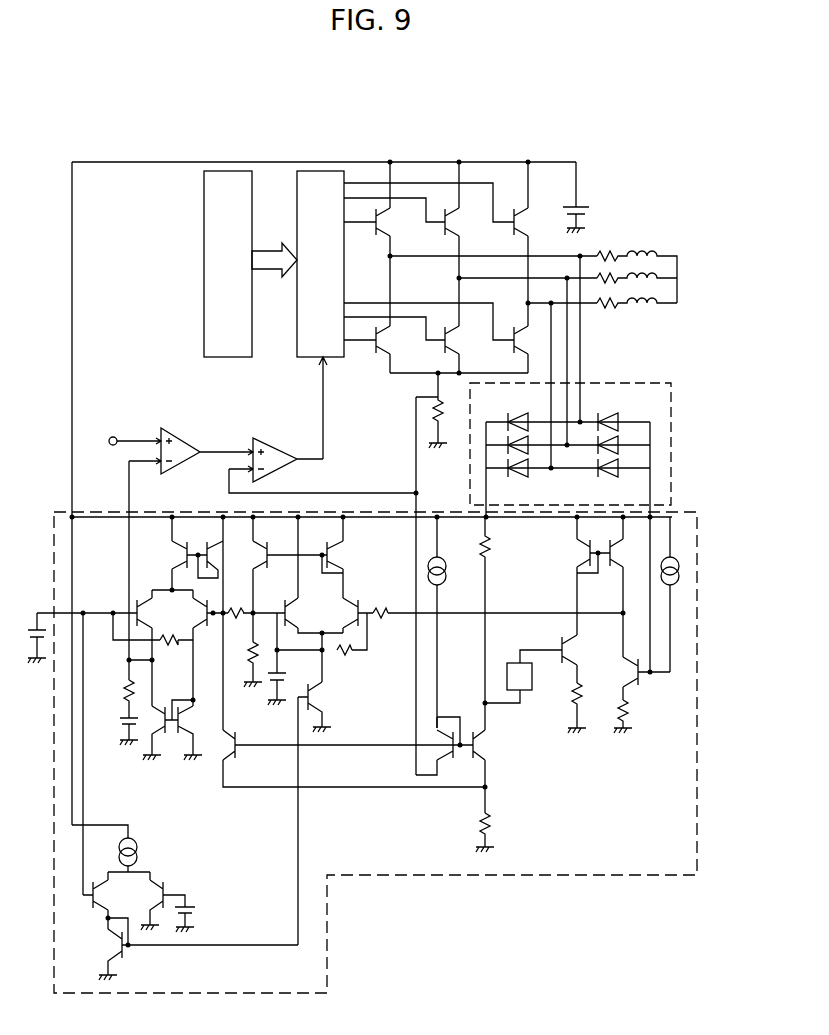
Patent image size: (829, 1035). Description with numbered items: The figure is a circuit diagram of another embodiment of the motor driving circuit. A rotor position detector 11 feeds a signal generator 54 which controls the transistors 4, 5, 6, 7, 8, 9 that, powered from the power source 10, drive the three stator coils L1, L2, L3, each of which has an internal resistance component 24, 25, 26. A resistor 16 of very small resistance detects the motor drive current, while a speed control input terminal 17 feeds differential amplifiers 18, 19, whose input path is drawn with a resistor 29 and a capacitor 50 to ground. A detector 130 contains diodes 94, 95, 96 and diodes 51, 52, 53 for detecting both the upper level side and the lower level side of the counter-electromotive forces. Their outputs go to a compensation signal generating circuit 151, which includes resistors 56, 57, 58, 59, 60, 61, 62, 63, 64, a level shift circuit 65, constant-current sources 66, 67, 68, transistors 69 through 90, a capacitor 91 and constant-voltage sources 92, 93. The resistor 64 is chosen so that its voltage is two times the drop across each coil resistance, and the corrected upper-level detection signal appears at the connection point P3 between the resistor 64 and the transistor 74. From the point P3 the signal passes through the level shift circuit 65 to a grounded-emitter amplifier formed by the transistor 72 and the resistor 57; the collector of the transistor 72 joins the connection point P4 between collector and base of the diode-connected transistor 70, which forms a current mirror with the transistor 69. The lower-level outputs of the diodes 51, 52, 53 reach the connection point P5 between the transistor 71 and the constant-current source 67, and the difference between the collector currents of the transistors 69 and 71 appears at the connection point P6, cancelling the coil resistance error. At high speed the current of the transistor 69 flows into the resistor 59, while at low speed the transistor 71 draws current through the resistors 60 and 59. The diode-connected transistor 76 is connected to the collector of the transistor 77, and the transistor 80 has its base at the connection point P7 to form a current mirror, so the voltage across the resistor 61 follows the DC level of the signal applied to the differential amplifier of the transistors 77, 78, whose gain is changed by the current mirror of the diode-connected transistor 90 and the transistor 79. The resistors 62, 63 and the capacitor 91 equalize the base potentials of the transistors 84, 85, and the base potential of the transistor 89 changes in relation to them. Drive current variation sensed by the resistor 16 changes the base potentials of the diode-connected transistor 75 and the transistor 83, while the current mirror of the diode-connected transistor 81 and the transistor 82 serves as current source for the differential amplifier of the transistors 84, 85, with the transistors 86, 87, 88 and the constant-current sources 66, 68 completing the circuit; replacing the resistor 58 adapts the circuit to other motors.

The transistor 4 is at (390, 230).
The transistor 5 is at (459, 230).
The transistor 6 is at (528, 215).
The transistor 7 is at (390, 346).
The transistor 8 is at (459, 348).
The transistor 9 is at (528, 348).
The power source 10 is at (580, 200).
The position detector 11 is at (232, 171).
The resistor 16 is at (445, 420).
The speed control input terminal 17 is at (112, 437).
The differential amplifier 18 is at (190, 440).
The differential amplifier 19 is at (282, 445).
The resistance component 24 is at (612, 250).
The resistance component 25 is at (612, 283).
The resistance component 26 is at (610, 310).
The resistor 29 is at (124, 688).
The capacitor 50 is at (118, 735).
The diode 51 is at (610, 416).
The diode 52 is at (620, 447).
The diode 53 is at (610, 475).
The signal generator 54 is at (318, 171).
The resistor 56 is at (632, 710).
The resistor 57 is at (585, 695).
The resistor 58 is at (492, 825).
The resistor 59 is at (382, 618).
The resistor 60 is at (346, 656).
The resistor 61 is at (248, 650).
The resistor 62 is at (234, 608).
The resistor 63 is at (168, 650).
The resistor 64 is at (478, 565).
The level shift circuit 65 is at (530, 690).
The constant-current source 66 is at (447, 562).
The constant-current source 67 is at (680, 568).
The constant-current source 68 is at (140, 845).
The transistor 69 is at (625, 548).
The transistor 70 is at (576, 550).
The transistor 71 is at (630, 690).
The transistor 72 is at (575, 655).
The transistor 74 is at (485, 755).
The transistor 75 is at (450, 765).
The transistor 76 is at (345, 555).
The transistor 77 is at (352, 610).
The transistor 78 is at (292, 614).
The transistor 79 is at (326, 705).
The transistor 80 is at (255, 568).
The transistor 81 is at (212, 553).
The transistor 82 is at (180, 556).
The transistor 83 is at (240, 740).
The transistor 84 is at (202, 614).
The transistor 85 is at (138, 600).
The transistor 86 is at (200, 735).
The transistor 87 is at (172, 740).
The transistor 88 is at (160, 882).
The transistor 89 is at (100, 912).
The transistor 90 is at (128, 955).
The capacitor 91 is at (37, 613).
The constant-voltage source 92 is at (195, 907).
The constant-voltage source 93 is at (284, 680).
The diode 94 is at (513, 418).
The diode 95 is at (525, 452).
The diode 96 is at (520, 475).
The detector 130 is at (672, 393).
The compensation signal generating circuit 151 is at (518, 877).
The stator coil L1 is at (695, 245).
The stator coil L2 is at (695, 268).
The stator coil L3 is at (695, 292).
The connection point P3 is at (486, 708).
The connection point P4 is at (576, 576).
The connection point P5 is at (650, 675).
The connection point P6 is at (622, 616).
The connection point P7 is at (345, 573).